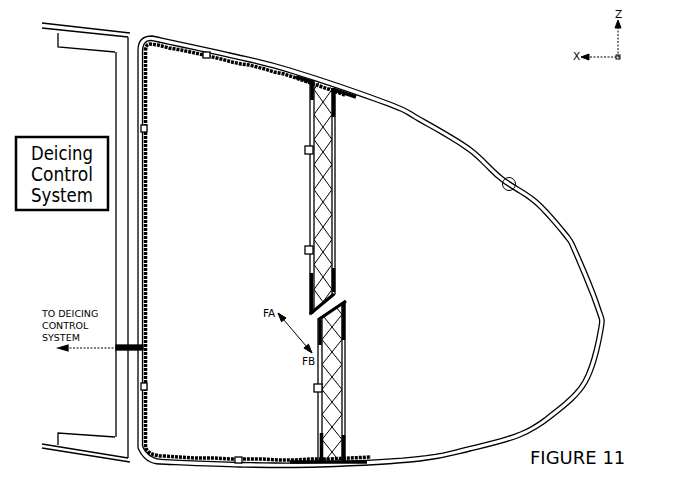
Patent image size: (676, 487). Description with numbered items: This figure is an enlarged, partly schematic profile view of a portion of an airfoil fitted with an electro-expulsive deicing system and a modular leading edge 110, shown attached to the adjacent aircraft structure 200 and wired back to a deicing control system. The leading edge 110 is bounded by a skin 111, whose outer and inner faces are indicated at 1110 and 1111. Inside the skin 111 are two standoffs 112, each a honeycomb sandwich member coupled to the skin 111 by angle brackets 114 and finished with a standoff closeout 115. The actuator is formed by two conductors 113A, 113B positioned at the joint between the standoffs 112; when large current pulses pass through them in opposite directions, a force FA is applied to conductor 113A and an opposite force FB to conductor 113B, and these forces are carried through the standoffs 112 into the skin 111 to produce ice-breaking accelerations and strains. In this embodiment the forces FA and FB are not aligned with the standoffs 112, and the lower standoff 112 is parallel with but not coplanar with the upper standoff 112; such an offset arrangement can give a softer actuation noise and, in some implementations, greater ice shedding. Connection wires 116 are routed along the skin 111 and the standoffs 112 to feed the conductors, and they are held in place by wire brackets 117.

The aircraft structure / fuselage frame 200 is at (118, 28).
The modular leading edge 110 is at (377, 252).
The skin 111 is at (570, 238).
The inner surface of skin 1110 is at (548, 203).
The skin region 1111 is at (514, 177).
The connection wires 116 is at (256, 68).
The wire brackets 117 is at (305, 151).
The standoff 112 is at (328, 170).
The conductor 113A is at (332, 293).
The conductor 113B is at (345, 307).
The angle brackets 114 is at (310, 82).
The standoff closeout 115 is at (335, 275).